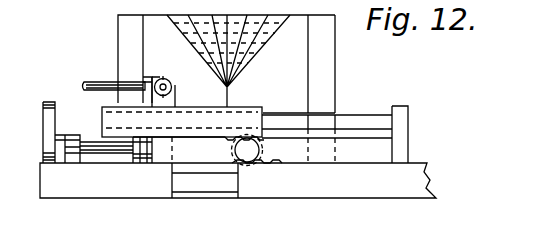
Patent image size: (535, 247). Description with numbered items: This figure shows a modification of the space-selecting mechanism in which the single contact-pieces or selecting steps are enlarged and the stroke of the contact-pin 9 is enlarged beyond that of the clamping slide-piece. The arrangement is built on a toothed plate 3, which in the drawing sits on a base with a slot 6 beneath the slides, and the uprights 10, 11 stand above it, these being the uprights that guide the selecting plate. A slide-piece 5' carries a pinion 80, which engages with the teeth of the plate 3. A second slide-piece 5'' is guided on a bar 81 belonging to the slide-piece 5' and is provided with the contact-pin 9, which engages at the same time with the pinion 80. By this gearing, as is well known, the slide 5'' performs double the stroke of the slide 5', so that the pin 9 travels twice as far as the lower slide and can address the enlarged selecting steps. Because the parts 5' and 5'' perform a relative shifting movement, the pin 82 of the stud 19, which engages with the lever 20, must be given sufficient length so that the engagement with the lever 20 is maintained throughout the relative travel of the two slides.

The plate 3 is at (238, 179).
The slot 6 is at (205, 180).
The slide-piece 5' is at (188, 150).
The slide-piece 5'' is at (182, 122).
The pinion 80 is at (258, 152).
The bar 81 is at (335, 134).
The pin 82 is at (114, 77).
The upright 10 is at (226, 59).
The upright 11 is at (299, 64).
The contact-pin 9 is at (163, 78).
The stud 19 is at (173, 86).
The lever 20 is at (143, 96).